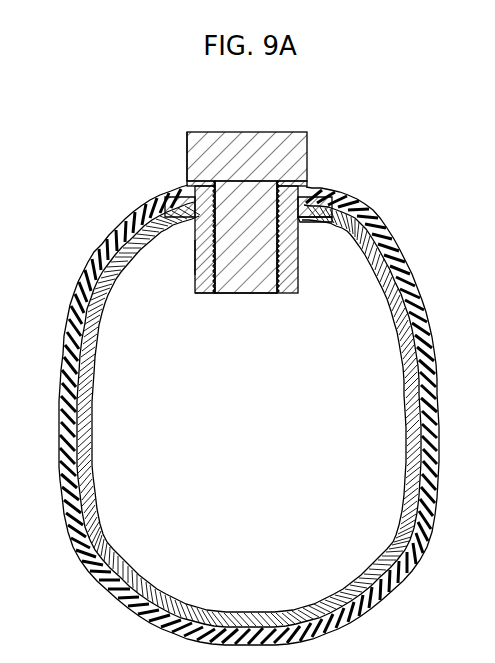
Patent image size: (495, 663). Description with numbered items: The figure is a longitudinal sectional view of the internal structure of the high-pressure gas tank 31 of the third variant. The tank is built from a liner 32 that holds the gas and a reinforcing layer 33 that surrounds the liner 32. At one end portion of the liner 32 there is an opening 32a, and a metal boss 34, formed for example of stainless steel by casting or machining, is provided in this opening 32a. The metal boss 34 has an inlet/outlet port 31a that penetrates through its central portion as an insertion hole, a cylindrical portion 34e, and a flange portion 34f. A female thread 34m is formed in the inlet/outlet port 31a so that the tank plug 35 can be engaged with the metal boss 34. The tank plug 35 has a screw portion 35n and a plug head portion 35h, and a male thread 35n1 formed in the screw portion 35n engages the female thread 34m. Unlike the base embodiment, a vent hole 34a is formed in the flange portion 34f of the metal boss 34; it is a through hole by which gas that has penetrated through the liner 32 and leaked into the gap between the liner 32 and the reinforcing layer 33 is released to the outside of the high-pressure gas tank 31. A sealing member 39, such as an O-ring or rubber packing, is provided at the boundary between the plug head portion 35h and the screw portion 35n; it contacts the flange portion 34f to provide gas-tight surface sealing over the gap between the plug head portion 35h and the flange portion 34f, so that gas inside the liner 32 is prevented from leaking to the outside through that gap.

The high-pressure gas tank 31 is at (271, 413).
The inlet/outlet port 31a is at (216, 296).
The liner 32 is at (407, 382).
The opening 32a is at (302, 232).
The reinforcing layer 33 is at (428, 382).
The metal boss 34 is at (248, 227).
The vent hole 34a is at (180, 200).
The cylindrical portion 34e is at (197, 258).
The flange portion 34f is at (315, 200).
The female thread 34m is at (214, 280).
The tank plug 35 is at (243, 236).
The plug head portion 35h is at (187, 158).
The screw portion 35n is at (246, 296).
The male thread 35n1 is at (277, 296).
The sealing member 39 is at (187, 180).